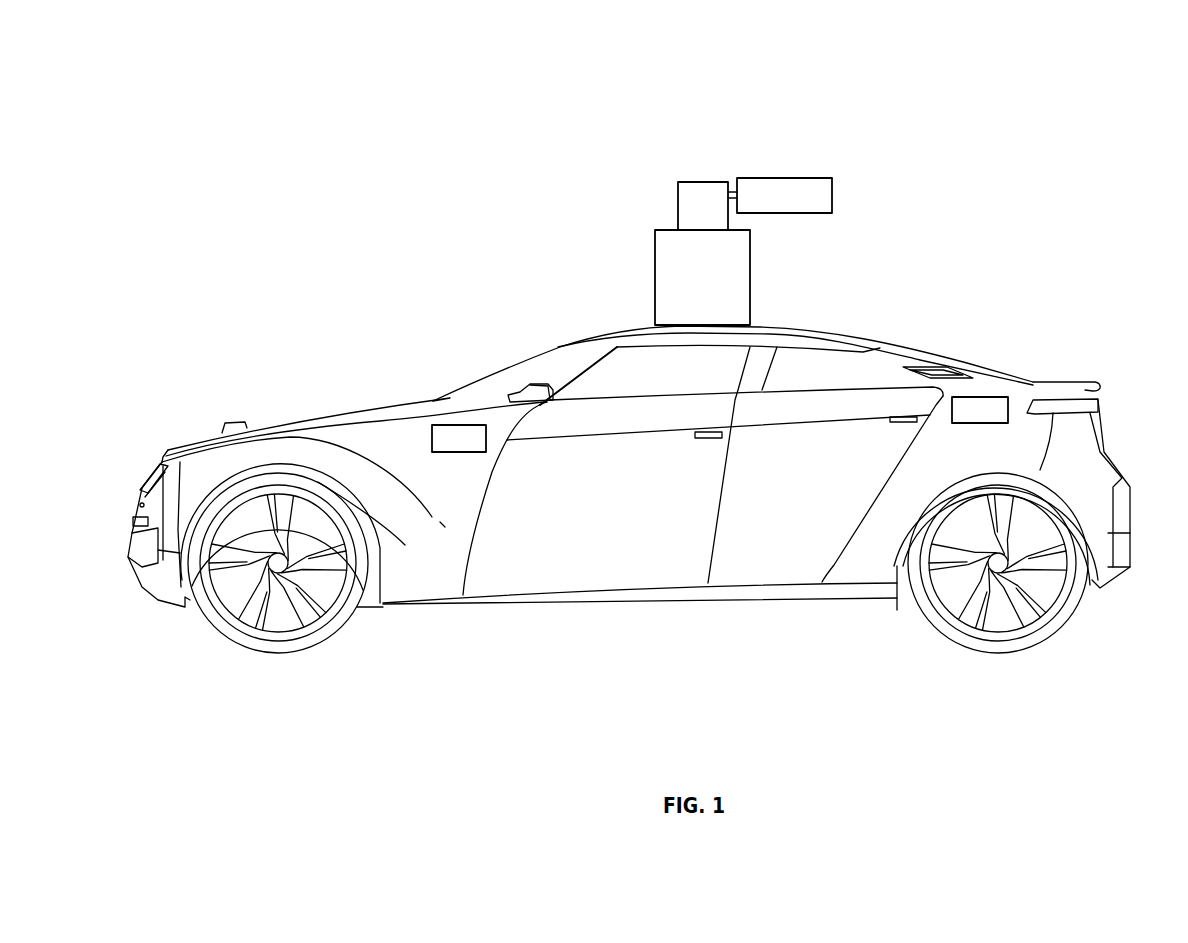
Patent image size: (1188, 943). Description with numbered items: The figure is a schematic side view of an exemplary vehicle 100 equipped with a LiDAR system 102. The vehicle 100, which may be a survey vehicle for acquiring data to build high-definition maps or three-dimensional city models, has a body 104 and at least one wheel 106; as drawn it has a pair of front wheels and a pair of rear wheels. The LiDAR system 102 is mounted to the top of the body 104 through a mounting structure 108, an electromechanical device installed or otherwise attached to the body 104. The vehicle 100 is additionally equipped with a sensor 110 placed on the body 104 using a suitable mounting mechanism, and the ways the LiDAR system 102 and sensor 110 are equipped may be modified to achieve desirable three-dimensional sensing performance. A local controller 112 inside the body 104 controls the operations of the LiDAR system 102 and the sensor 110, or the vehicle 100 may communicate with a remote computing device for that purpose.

The vehicle 100 is at (620, 54).
The LiDAR system 102 is at (756, 146).
The body 104 is at (522, 298).
The wheel 106 is at (1112, 622).
The mounting structure 108 is at (763, 290).
The sensor 110 is at (450, 421).
The local controller 112 is at (1012, 395).